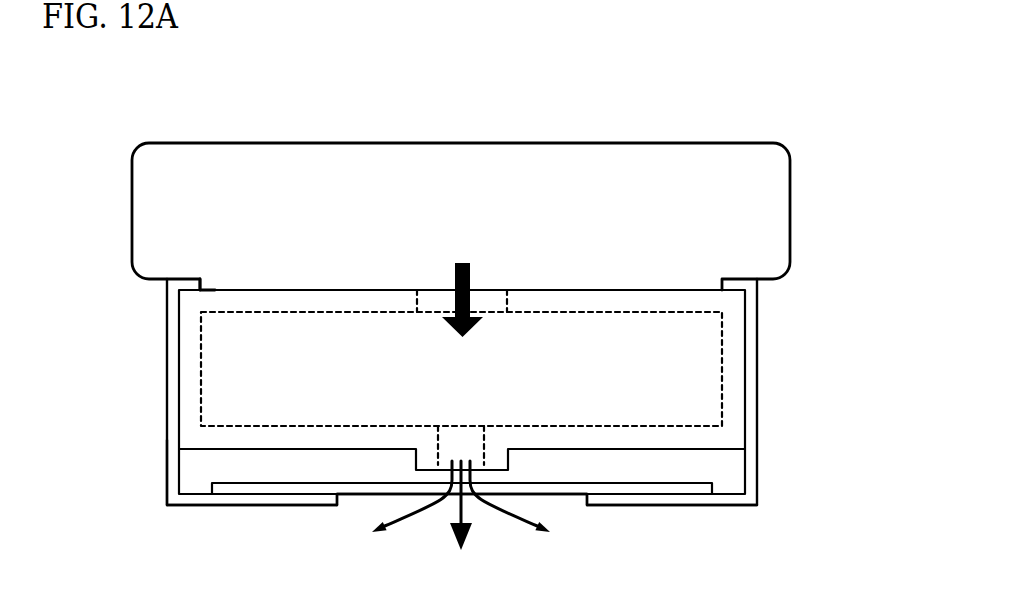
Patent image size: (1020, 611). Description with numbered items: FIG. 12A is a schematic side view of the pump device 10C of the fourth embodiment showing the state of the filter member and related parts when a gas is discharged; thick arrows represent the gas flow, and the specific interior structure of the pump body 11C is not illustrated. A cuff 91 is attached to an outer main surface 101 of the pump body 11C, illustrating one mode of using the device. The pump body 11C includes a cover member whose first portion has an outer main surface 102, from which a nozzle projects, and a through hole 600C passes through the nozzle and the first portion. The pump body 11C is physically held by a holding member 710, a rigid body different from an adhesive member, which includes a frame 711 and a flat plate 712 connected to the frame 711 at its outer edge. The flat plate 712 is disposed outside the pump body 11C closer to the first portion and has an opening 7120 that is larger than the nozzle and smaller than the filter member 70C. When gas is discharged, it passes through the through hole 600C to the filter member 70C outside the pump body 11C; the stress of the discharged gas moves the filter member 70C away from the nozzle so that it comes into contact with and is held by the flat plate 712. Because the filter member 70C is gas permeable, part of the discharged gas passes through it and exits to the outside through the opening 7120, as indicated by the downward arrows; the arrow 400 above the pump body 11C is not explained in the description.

The cuff 91 is at (163, 155).
The outer main surface 101 is at (220, 290).
The pump device 10C is at (165, 378).
The outer main surface 102 is at (198, 447).
The pump body 11C is at (735, 368).
The through hole 600C is at (481, 437).
The air flow 400 is at (489, 302).
The filter member 70C is at (667, 488).
The holding member 710 is at (442, 514).
The frame 711 is at (172, 484).
The flat plate 712 is at (462, 523).
The opening 7120 is at (353, 502).